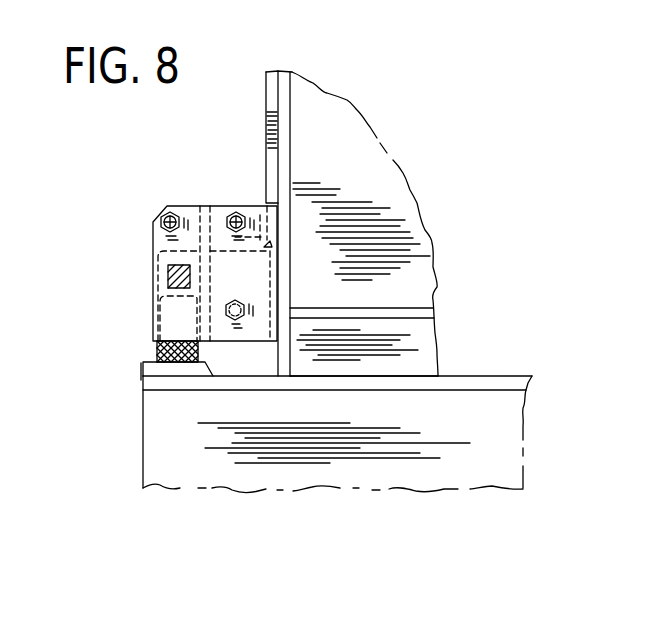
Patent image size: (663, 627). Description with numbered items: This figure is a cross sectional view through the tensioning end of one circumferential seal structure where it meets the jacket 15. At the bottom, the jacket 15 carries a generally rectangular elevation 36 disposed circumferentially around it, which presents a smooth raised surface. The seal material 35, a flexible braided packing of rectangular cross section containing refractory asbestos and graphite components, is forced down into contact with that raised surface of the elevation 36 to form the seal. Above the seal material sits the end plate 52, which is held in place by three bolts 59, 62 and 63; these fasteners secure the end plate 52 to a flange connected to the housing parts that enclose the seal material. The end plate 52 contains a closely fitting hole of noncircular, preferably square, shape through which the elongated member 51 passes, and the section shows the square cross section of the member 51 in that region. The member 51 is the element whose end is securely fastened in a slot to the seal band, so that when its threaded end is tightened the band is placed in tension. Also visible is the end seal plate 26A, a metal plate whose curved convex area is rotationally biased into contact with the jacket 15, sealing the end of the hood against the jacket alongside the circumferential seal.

The jacket 15 is at (478, 378).
The end seal plate 26A is at (410, 272).
The seal material 35 is at (156, 351).
The rectangular elevation 36 is at (148, 366).
The elongated member 51 is at (168, 277).
The end plate 52 is at (230, 288).
The bolt 59 is at (173, 212).
The bolt 62 is at (237, 212).
The bolt 63 is at (234, 321).